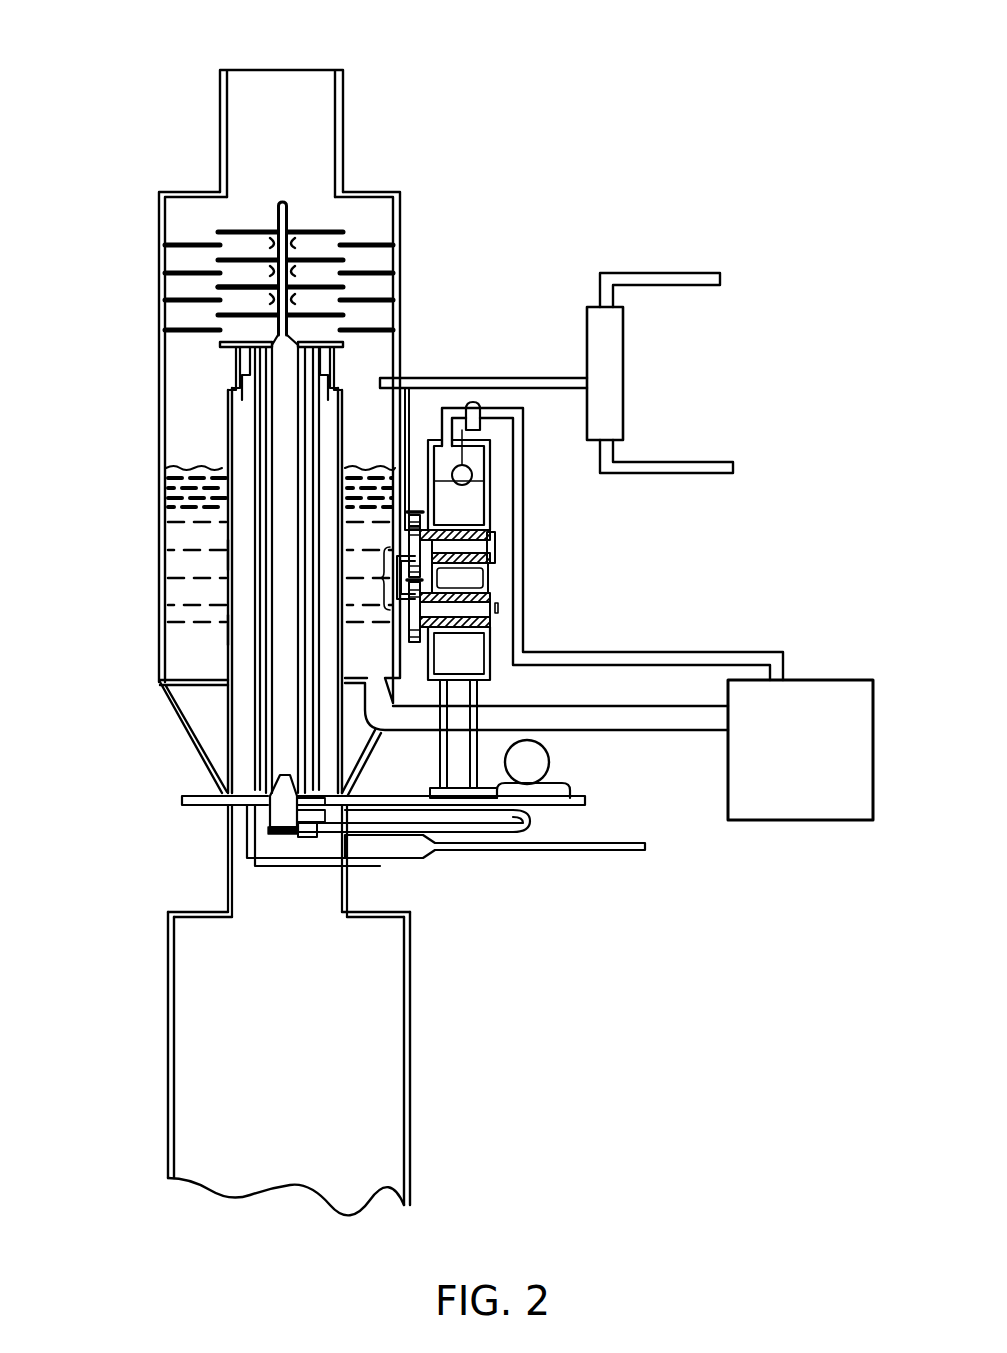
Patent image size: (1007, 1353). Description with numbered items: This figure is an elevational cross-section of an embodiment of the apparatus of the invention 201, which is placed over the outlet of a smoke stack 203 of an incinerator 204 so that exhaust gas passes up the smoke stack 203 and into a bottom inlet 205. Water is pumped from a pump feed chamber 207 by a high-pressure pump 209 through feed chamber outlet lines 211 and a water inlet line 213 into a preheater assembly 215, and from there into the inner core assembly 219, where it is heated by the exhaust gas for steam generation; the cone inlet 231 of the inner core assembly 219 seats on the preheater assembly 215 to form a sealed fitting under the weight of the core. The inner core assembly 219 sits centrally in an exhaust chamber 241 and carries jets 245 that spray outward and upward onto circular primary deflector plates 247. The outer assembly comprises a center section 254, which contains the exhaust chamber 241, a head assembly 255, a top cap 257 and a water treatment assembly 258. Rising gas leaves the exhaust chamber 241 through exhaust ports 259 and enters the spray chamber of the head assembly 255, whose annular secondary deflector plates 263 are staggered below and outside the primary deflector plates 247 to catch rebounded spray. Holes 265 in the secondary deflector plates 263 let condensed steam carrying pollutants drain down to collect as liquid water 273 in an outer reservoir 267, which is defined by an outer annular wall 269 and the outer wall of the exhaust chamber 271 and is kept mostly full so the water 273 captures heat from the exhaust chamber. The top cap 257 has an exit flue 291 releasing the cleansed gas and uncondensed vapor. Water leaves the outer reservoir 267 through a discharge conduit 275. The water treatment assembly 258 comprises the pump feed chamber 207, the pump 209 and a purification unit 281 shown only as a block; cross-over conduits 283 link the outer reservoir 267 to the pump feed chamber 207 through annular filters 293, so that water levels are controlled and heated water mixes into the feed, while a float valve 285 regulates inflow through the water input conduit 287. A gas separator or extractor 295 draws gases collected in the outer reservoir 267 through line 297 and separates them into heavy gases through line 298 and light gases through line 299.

The apparatus of the invention 201 is at (140, 634).
The smoke stack 203 is at (315, 900).
The incinerator 204 is at (373, 1077).
The bottom inlet 205 is at (246, 886).
The pump feed chamber 207 is at (470, 652).
The pump 209 is at (537, 767).
The feed chamber outlet lines 211 is at (445, 748).
The water inlet line 213 is at (520, 835).
The preheater assembly 215 is at (262, 828).
The inner core assembly 219 is at (285, 540).
The cone inlet 231 is at (275, 787).
The exhaust chamber 241 is at (235, 645).
The jets 245 is at (267, 297).
The primary deflector plates 247 is at (305, 243).
The center section 254 is at (185, 598).
The head assembly 255 is at (215, 283).
The top cap 257 is at (345, 125).
The water treatment assembly 258 is at (475, 508).
The exhaust ports 259 is at (347, 372).
The secondary deflector plates 263 is at (385, 245).
The holes 265 is at (172, 247).
The outer reservoir 267 is at (228, 630).
The outer annular wall 269 is at (228, 557).
The outer wall of the exhaust chamber 271 is at (213, 662).
The liquid water 273 is at (217, 492).
The discharge conduit 275 is at (640, 718).
The purification unit 281 is at (790, 800).
The cross-over conduits 283 is at (383, 580).
The float valve 285 is at (480, 400).
The water input conduit 287 is at (680, 650).
The exit flue 291 is at (275, 95).
The annular filters 293 is at (485, 595).
The gas separator or extractor 295 is at (610, 373).
The line 297 is at (557, 378).
The line 298 is at (733, 468).
The line 299 is at (720, 280).